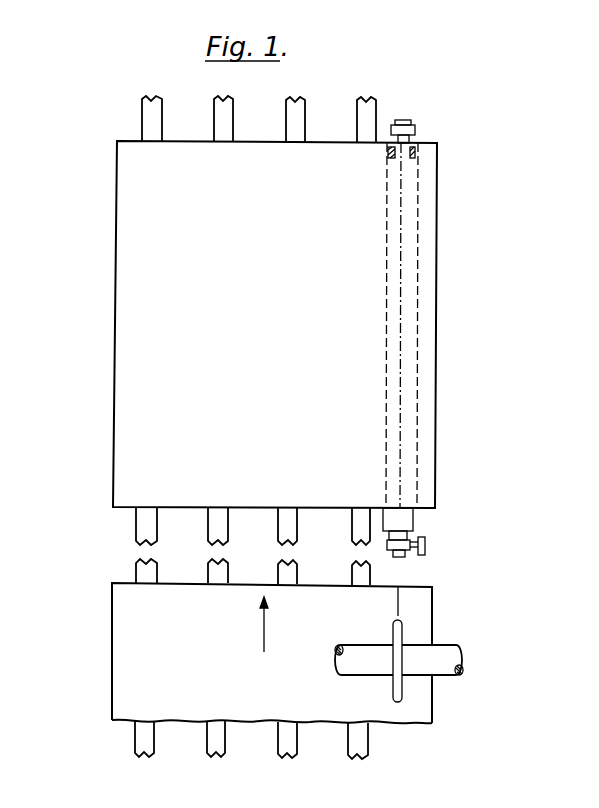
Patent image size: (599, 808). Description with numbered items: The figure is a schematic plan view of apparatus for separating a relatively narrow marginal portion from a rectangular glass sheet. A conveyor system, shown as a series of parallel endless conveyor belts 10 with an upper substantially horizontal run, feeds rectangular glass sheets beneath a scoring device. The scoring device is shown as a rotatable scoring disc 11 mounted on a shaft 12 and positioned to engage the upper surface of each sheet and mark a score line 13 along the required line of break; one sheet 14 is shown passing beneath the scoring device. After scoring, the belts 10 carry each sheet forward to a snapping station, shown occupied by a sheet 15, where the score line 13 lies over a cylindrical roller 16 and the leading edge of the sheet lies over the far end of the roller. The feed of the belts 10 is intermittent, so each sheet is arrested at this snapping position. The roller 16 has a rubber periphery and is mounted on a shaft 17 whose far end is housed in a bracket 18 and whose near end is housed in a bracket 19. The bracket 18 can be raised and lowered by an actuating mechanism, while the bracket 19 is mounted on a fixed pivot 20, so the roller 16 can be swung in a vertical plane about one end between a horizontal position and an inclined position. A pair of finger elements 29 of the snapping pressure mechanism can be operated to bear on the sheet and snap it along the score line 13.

The endless conveyor belts 10 is at (207, 742).
The rotatable scoring disc 11 is at (393, 692).
The shaft 12 is at (368, 645).
The score line 13 is at (400, 349).
The sheet 14 is at (112, 653).
The sheet 15 is at (114, 422).
The cylindrical roller 16 is at (417, 418).
The shaft 17 is at (400, 121).
The bracket 18 is at (415, 128).
The bracket 19 is at (387, 546).
The fixed pivot 20 is at (419, 540).
The finger elements 29 is at (410, 153).